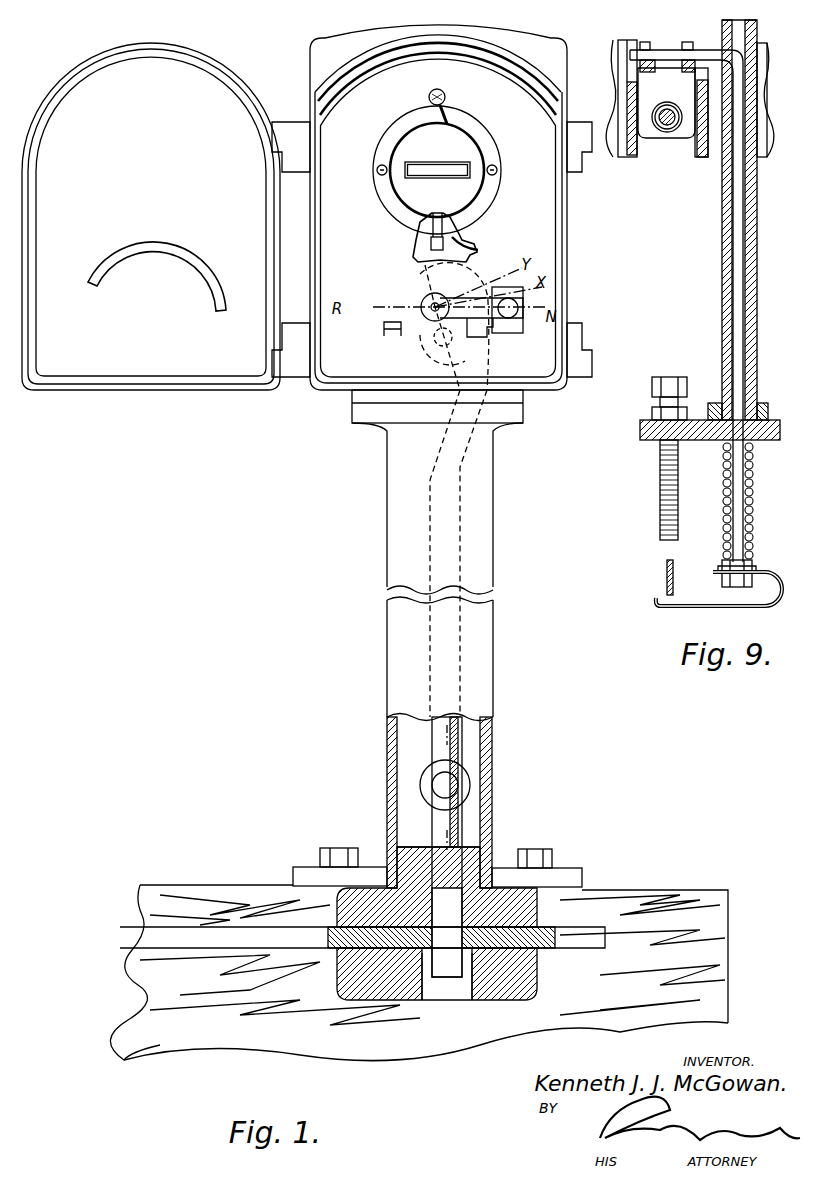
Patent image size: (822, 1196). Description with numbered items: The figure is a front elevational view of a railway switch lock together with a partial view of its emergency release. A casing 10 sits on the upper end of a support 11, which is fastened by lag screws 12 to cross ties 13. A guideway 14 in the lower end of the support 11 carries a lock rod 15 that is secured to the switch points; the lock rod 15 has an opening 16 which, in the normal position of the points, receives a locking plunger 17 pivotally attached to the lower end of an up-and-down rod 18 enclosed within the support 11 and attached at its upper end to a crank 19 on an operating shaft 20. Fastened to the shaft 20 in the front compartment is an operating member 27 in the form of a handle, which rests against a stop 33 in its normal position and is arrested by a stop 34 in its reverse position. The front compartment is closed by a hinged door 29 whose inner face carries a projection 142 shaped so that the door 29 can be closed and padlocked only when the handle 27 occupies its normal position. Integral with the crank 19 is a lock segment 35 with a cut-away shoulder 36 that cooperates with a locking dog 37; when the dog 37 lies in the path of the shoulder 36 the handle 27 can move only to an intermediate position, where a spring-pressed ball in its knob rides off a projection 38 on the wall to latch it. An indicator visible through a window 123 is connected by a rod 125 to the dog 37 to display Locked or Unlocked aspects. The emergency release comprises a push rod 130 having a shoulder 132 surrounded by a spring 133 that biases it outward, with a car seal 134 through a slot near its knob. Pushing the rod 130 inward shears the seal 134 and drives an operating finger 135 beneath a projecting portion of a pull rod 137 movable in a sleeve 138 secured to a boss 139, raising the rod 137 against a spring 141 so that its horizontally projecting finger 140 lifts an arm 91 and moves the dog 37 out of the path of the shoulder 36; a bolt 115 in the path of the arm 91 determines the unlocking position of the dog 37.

In FIG. 1, the casing 10 is at (537, 52).
In FIG. 1, the support 11 is at (387, 549).
In FIG. 1, the lag screws 12 is at (338, 848).
In FIG. 1, the cross ties 13 is at (253, 893).
In FIG. 1, the guideway 14 is at (540, 930).
In FIG. 1, the lock rod 15 is at (138, 926).
In FIG. 1, the opening 16 is at (437, 953).
In FIG. 1, the locking plunger 17 is at (462, 815).
In FIG. 1, the up-and-down rod 18 is at (462, 733).
In FIG. 1, the crank 19 is at (441, 346).
In FIG. 1, the operating shaft 20 is at (430, 318).
In FIG. 1, the operating member 27 is at (435, 294).
In FIG. 1, the door 29 is at (73, 68).
In FIG. 1, the stop 33 is at (490, 334).
In FIG. 1, the stop 34 is at (384, 331).
In FIG. 1, the lock segment 35 is at (414, 253).
In FIG. 1, the shoulder 36 is at (476, 247).
In FIG. 1, the locking dog 37 is at (418, 240).
In FIG. 1, the projection 38 is at (527, 302).
In FIG. 9, the arm 91 is at (667, 569).
In FIG. 9, the bolt 115 is at (660, 506).
In FIG. 1, the window 123 is at (470, 163).
In FIG. 1, the rod 125 is at (391, 211).
In FIG. 1, the push rod 130 is at (437, 89).
In FIG. 9, the push rod 130 is at (682, 110).
In FIG. 9, the shoulder 132 is at (696, 148).
In FIG. 9, the spring 133 is at (668, 133).
In FIG. 1, the car seal 134 is at (450, 118).
In FIG. 9, the operating finger 135 is at (688, 48).
In FIG. 9, the pull rod 137 is at (738, 208).
In FIG. 9, the sleeve 138 is at (724, 252).
In FIG. 9, the boss 139 is at (645, 437).
In FIG. 9, the horizontally projecting finger 140 is at (658, 604).
In FIG. 9, the spring 141 is at (757, 480).
In FIG. 1, the projection 142 is at (128, 247).